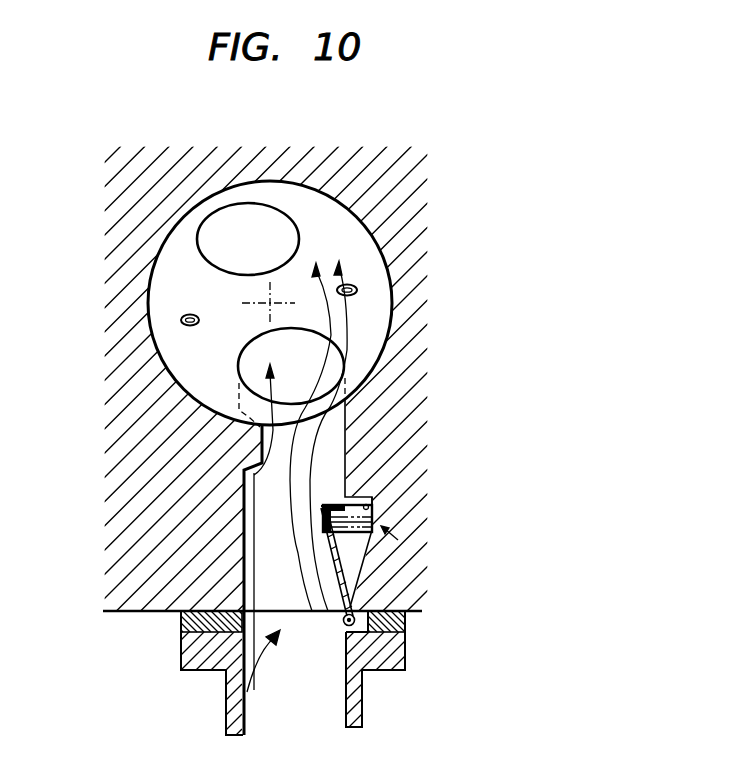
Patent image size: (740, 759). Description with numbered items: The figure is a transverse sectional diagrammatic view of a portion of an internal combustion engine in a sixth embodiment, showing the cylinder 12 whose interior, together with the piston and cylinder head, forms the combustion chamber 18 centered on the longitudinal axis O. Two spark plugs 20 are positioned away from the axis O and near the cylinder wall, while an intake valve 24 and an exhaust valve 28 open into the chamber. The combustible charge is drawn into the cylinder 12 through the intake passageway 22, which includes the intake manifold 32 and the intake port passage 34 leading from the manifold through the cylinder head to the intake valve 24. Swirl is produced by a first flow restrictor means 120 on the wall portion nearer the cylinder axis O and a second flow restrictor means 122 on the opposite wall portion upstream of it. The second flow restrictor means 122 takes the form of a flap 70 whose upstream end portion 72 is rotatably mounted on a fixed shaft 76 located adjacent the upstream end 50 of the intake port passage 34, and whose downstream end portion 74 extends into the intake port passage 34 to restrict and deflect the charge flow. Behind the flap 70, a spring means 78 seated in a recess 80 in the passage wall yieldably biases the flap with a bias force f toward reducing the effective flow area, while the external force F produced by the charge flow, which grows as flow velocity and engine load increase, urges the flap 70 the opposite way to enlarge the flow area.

The cylinder 12 is at (362, 245).
The combustion chamber 18 is at (205, 300).
The longitudinal axis O is at (273, 302).
The spark plugs 20 is at (181, 320).
The intake passageway 22 is at (233, 672).
The intake valve 24 is at (240, 359).
The exhaust valve 28 is at (243, 218).
The intake manifold 32 is at (358, 712).
The intake port passage 34 is at (273, 555).
The upstream end of the intake port passage 50 is at (245, 621).
The flap 70 is at (312, 613).
The upstream end portion of the flap 72 is at (345, 624).
The downstream end portion of the flap 74 is at (322, 510).
The fixed shaft 76 is at (372, 623).
The spring means 78 is at (375, 495).
The recess 80 is at (370, 505).
The first flow restrictor means 120 is at (243, 490).
The second flow restrictor means 122 is at (324, 565).
The external force F is at (398, 542).
The bias force f is at (330, 503).